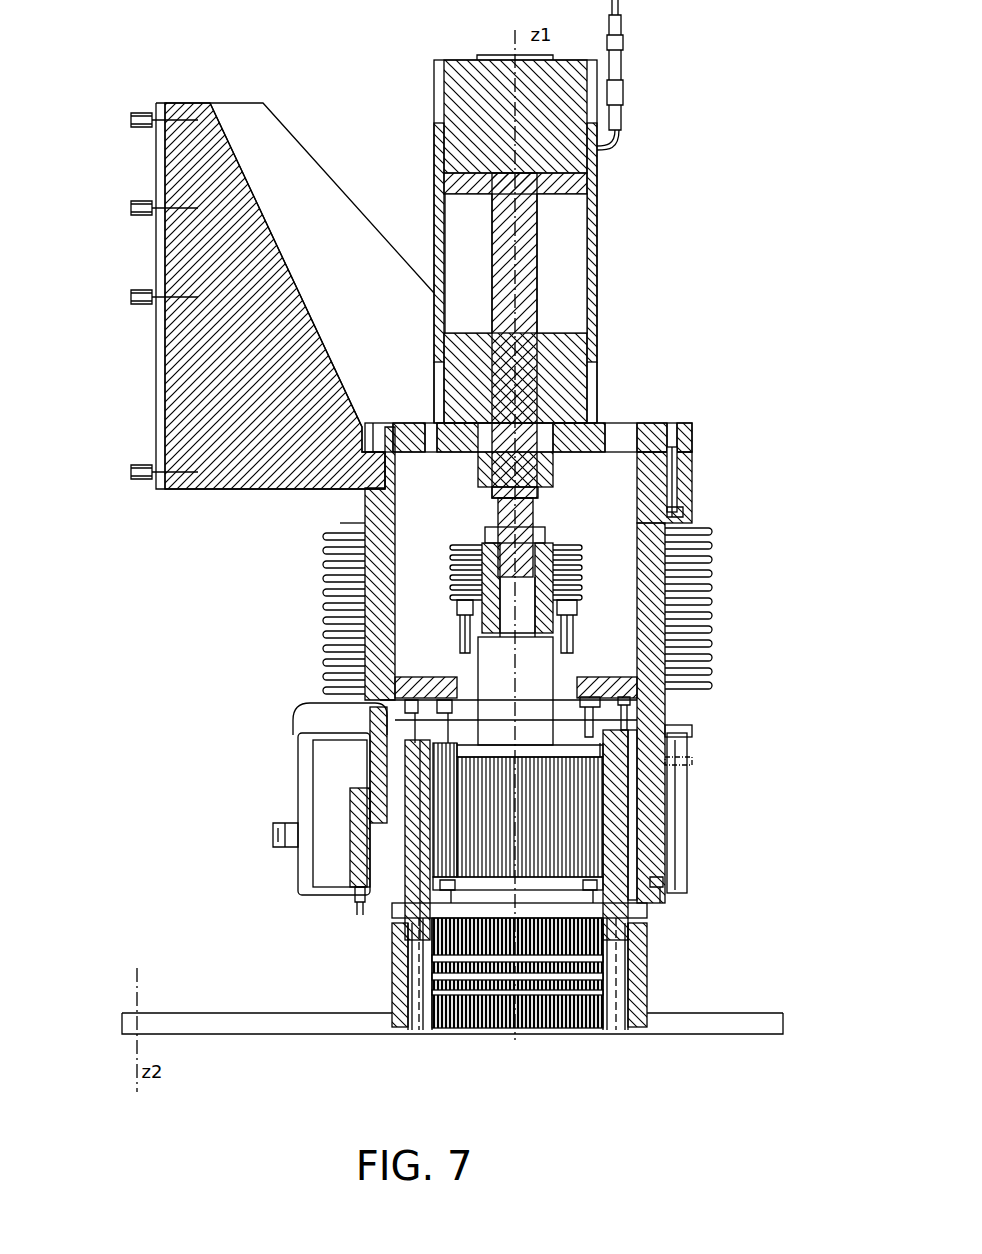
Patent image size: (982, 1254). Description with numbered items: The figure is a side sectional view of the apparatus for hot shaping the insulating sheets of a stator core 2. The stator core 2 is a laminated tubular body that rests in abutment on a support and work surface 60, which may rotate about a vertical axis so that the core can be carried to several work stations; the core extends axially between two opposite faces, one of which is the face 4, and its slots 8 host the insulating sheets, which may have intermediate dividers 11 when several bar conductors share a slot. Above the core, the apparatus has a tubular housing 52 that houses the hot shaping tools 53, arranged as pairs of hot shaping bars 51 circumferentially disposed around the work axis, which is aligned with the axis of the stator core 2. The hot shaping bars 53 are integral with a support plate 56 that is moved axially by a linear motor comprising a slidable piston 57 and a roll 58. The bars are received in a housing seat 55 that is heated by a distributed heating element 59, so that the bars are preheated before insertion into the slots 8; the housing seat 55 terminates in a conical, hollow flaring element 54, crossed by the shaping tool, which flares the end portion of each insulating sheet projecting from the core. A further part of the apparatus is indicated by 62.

The pair of hot shaping bars 51 is at (160, 352).
The roll 58 is at (563, 380).
The slidable piston 57 is at (492, 488).
The tubular housing 52 is at (380, 613).
The support plate 56 is at (690, 735).
The housing seat 55 is at (633, 753).
The hot shaping tool 53 is at (620, 805).
The cover 62 is at (685, 830).
The conical flaring element 54 is at (640, 917).
The distributed heating element 59 is at (370, 783).
The slot 8 is at (426, 1022).
The stator core 2 is at (405, 935).
The intermediate divider 11 is at (418, 1022).
The face of the stator core 4 is at (640, 1030).
The support and work surface 60 is at (276, 1034).